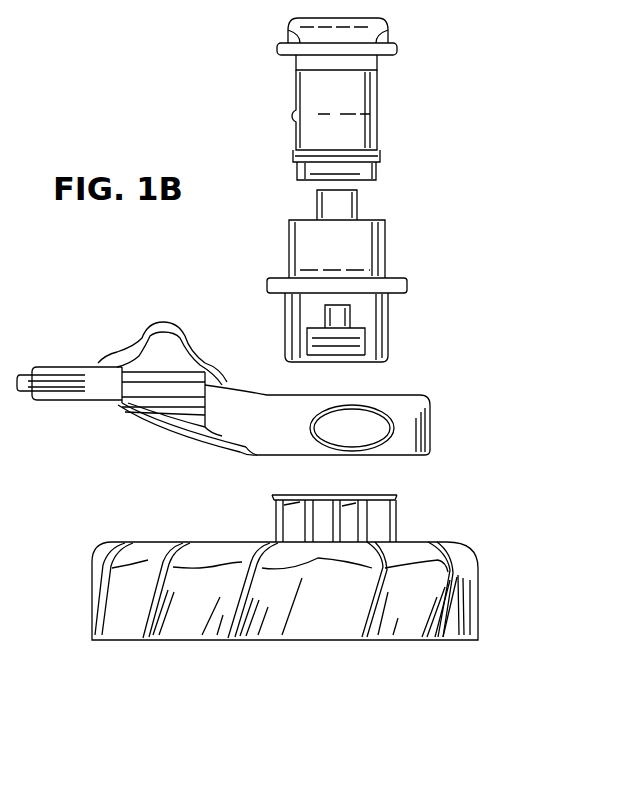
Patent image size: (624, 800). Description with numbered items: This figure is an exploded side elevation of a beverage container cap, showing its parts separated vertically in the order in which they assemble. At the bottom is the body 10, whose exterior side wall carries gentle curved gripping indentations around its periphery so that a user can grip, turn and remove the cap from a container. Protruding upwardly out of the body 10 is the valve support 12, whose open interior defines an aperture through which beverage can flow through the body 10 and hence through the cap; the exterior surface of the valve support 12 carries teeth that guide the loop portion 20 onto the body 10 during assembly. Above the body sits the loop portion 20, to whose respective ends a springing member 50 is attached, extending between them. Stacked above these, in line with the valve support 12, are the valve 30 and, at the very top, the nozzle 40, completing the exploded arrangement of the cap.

The body 10 is at (329, 617).
The valve support 12 is at (397, 520).
The loop portion 20 is at (430, 428).
The valve 30 is at (385, 240).
The nozzle 40 is at (378, 88).
The springing member 50 is at (167, 322).